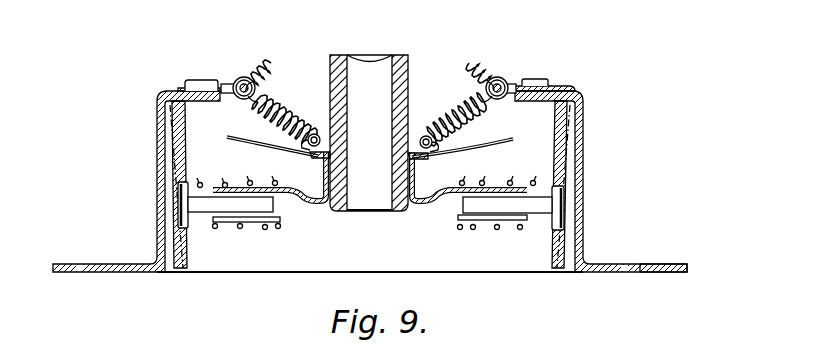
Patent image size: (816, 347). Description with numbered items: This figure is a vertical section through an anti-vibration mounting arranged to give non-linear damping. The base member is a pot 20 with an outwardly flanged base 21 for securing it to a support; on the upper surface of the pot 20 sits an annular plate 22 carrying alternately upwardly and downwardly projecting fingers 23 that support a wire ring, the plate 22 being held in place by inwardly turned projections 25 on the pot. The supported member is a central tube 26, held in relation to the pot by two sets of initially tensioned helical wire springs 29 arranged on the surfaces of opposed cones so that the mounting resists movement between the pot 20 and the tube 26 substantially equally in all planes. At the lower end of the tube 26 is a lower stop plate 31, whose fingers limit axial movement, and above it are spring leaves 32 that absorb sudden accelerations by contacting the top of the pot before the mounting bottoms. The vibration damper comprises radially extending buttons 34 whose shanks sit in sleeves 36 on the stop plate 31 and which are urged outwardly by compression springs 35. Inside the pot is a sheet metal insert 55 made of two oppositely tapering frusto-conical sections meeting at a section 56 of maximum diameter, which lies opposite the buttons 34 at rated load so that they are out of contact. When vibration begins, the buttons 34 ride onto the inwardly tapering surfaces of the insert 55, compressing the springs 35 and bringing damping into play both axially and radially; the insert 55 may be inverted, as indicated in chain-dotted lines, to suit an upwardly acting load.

The pot 20 is at (587, 140).
The outwardly flanged base 21 is at (668, 266).
The annular plate 22 is at (540, 79).
The fingers 23 is at (500, 78).
The inwardly turned projections 25 is at (552, 86).
The tube 26 is at (352, 62).
The helical wire springs 29 is at (281, 107).
The lower stop plate 31 is at (419, 204).
The spring leaves 32 is at (513, 141).
The buttons 34 is at (188, 186).
The compression springs 35 is at (266, 227).
The sleeves 36 is at (237, 228).
The sheet metal insert 55 is at (160, 146).
The section of maximum diameter 56 is at (174, 212).